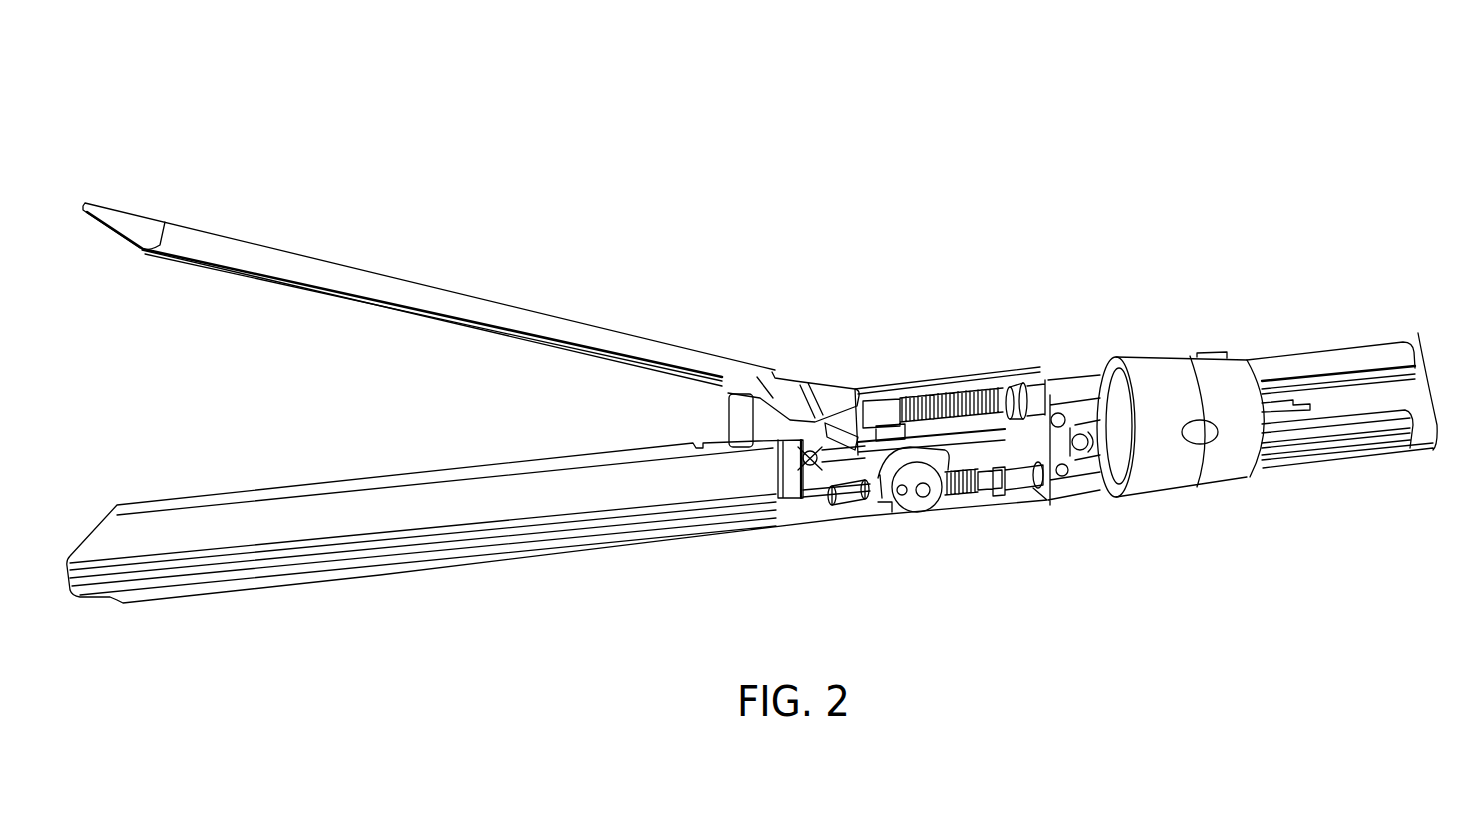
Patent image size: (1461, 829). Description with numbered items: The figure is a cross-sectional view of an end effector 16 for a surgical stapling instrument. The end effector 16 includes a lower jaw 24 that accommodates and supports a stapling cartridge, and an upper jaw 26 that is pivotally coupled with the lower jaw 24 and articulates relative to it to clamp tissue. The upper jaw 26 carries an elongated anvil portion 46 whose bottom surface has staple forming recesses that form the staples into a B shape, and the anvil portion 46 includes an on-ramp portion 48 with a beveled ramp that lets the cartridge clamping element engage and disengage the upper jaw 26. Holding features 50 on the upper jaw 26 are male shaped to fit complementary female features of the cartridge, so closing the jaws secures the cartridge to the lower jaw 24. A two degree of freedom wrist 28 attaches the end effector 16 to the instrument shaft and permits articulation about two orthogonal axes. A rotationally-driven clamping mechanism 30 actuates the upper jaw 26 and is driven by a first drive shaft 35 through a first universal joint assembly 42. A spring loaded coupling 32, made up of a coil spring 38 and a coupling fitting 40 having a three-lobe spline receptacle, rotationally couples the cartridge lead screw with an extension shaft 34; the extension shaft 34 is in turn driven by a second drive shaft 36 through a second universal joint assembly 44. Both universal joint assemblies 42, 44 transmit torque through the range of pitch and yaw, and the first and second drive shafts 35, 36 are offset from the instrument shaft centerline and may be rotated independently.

The upper jaw 26 is at (440, 290).
The elongated anvil portion 46 is at (510, 330).
The on-ramp portion 48 is at (733, 387).
The holding features 50 is at (737, 449).
The lower jaw 24 is at (543, 553).
The rotationally-driven clamping mechanism 30 is at (947, 387).
The first universal joint assembly 42 is at (1040, 383).
The coupling fitting 40 is at (845, 507).
The coil spring 38 is at (957, 493).
The extension shaft 34 is at (1013, 490).
The second universal joint assembly 44 is at (1068, 482).
The two degree of freedom wrist 28 is at (1040, 320).
The first drive shaft 35 is at (1303, 367).
The second drive shaft 36 is at (1373, 455).
The end effector 16 is at (282, 150).
The spring loaded coupling 32 is at (977, 535).